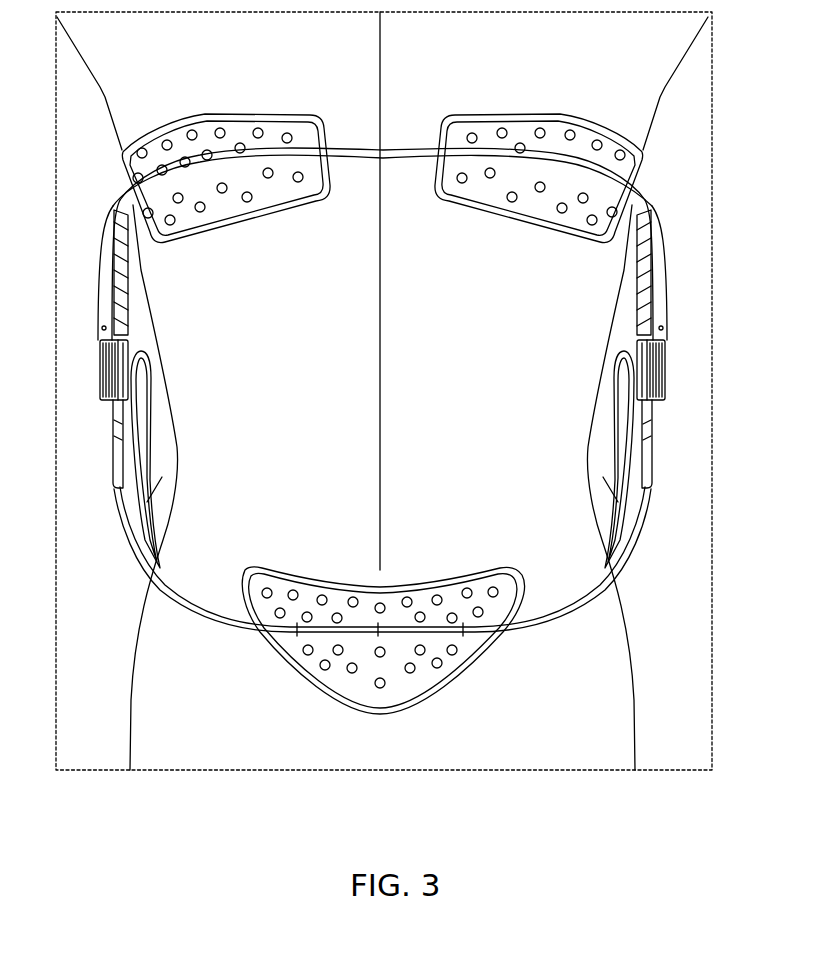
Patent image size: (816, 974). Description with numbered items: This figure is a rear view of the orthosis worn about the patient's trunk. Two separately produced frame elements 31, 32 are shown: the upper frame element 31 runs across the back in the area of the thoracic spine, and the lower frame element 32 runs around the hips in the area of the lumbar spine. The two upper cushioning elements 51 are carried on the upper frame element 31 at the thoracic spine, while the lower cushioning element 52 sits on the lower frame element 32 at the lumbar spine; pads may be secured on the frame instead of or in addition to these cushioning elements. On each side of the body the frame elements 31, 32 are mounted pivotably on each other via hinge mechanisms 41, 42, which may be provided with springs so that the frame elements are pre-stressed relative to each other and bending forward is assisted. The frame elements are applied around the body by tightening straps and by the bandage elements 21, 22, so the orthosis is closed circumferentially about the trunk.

The bandage element 21 is at (637, 530).
The bandage element 22 is at (127, 530).
The frame element 31 is at (353, 148).
The frame element 32 is at (198, 610).
The hinge mechanism 41 is at (668, 367).
The hinge mechanism 42 is at (97, 373).
The upper cushioning element 51 is at (162, 127).
The lower cushioning element 52 is at (298, 677).